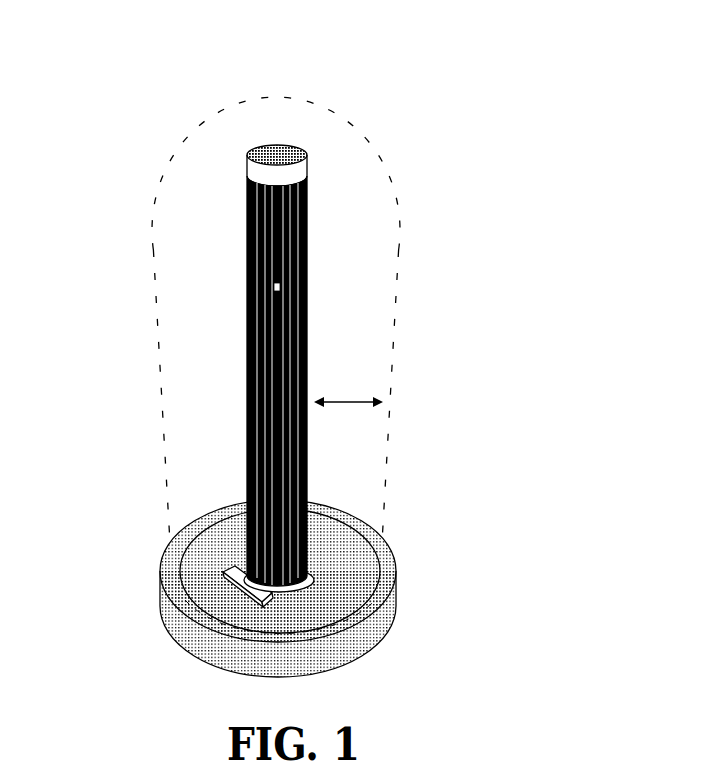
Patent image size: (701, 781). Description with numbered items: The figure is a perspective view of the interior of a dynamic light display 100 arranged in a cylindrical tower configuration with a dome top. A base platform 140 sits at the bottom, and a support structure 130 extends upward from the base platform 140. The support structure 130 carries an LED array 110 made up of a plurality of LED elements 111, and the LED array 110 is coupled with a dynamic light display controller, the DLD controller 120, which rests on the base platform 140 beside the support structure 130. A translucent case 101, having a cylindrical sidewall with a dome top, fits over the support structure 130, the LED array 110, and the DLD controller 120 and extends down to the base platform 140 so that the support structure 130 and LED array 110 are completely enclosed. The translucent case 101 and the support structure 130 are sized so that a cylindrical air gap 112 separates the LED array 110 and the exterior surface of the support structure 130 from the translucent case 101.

The dynamic light display 100 is at (136, 108).
The translucent case 101 is at (368, 128).
The LED array 110 is at (342, 213).
The LED element 111 is at (278, 289).
The air gap 112 is at (352, 400).
The DLD controller 120 is at (240, 585).
The support structure 130 is at (285, 152).
The base platform 140 is at (363, 623).